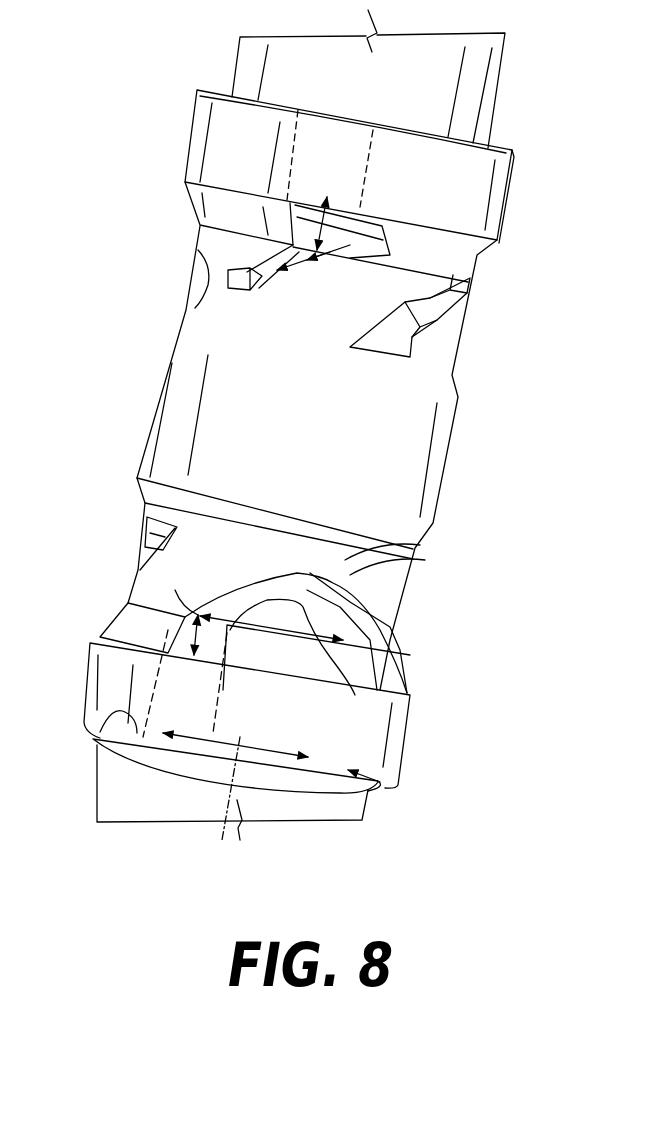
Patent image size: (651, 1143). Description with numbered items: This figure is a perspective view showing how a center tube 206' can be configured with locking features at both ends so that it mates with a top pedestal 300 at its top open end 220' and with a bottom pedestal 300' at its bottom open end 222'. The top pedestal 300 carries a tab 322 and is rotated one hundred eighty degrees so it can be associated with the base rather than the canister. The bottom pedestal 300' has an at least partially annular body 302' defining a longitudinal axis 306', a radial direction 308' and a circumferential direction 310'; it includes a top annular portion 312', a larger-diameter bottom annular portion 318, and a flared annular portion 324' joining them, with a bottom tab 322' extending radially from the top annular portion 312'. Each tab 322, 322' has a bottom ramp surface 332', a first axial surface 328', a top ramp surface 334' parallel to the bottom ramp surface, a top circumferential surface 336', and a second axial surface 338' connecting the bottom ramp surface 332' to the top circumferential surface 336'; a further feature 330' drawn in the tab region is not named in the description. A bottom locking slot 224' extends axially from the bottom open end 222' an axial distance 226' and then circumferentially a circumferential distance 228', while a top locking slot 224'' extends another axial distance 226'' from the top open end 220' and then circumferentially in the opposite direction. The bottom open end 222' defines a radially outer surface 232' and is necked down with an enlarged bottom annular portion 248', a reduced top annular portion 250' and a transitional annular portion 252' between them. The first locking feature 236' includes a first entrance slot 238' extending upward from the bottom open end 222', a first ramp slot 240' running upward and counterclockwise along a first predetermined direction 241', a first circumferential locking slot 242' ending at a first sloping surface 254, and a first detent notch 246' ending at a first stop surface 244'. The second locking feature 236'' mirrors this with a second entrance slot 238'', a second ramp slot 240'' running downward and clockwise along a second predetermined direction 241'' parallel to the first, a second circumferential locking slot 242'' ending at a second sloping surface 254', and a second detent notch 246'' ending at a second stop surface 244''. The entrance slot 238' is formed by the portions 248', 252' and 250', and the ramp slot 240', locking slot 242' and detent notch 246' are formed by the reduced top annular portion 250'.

The top open end 220' is at (368, 79).
The top pedestal 300 is at (546, 107).
The center tube 206' is at (334, 390).
The tab 322 is at (239, 210).
The second entrance slot 238'' is at (324, 169).
The another axial distance 226'' is at (383, 223).
The second sloping surface 254' is at (175, 259).
The second stop surface 244'' is at (185, 288).
The second detent notch 246'' is at (155, 321).
The second circumferential locking slot 242'' is at (157, 355).
The second ramp slot 240'' is at (268, 308).
The top locking slot 224'' is at (322, 297).
The second locking feature 236'' is at (376, 278).
The second predetermined direction 241'' is at (264, 337).
The radially outer surface 232' is at (287, 715).
The enlarged bottom annular portion 248' is at (446, 778).
The transitional annular portion 252' is at (457, 702).
The at least partially annular body 302' is at (236, 788).
The circumferential direction 310' is at (66, 766).
The bottom open end 222' is at (74, 724).
The bottom pedestal 300' is at (426, 820).
The bottom annular portion 318 is at (322, 818).
The longitudinal axis 306' is at (240, 860).
The radial direction 308' is at (271, 738).
The axial distance 226' is at (185, 676).
The first entrance slot 238' is at (100, 685).
The circumferential distance 228' is at (305, 653).
The first ramp slot 240' is at (291, 625).
The flared annular portion 324' is at (136, 609).
The first predetermined direction 241' is at (233, 561).
The bottom locking slot 224' is at (258, 536).
The first locking feature 236' is at (297, 529).
The first axial surface 328' is at (341, 519).
The first detent notch 246' is at (376, 509).
The top ramp surface 334' is at (387, 530).
The top circumferential surface 336' is at (423, 520).
The bottom tab 322' is at (457, 536).
The second axial surface 338' is at (480, 533).
The first stop surface 244' is at (452, 549).
The reduced top annular portion 250' is at (473, 574).
The top annular portion 312' is at (445, 594).
The bottom ramp surface 332' is at (425, 617).
The first sloping surface 254 is at (440, 645).
The first circumferential locking slot 242' is at (419, 664).
The release arm 330' is at (352, 713).